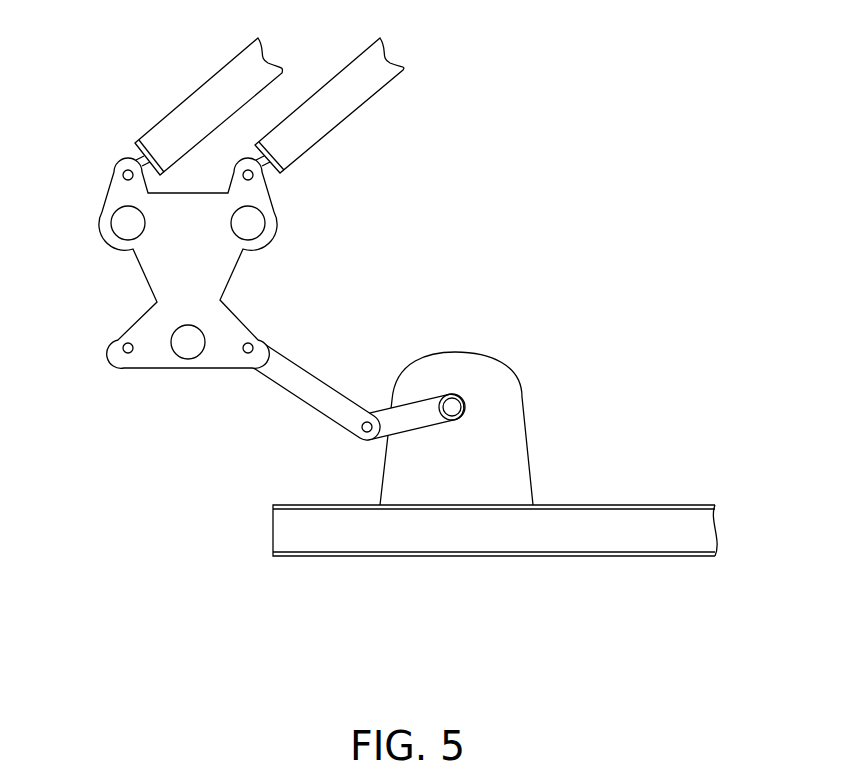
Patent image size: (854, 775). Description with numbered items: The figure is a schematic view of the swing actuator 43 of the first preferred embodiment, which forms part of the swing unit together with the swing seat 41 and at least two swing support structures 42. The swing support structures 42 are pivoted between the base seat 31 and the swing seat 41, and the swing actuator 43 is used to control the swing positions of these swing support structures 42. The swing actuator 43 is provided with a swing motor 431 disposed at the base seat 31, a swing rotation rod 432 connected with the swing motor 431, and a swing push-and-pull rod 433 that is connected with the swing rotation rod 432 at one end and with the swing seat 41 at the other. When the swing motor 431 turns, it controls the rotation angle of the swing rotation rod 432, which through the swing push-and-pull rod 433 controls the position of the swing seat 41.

The base seat 31 is at (598, 542).
The swing seat 41 is at (163, 281).
The swing support structures 42 is at (187, 100).
The swing actuator 43 is at (513, 274).
The swing motor 431 is at (515, 445).
The swing rotation rod 432 is at (387, 417).
The swing push-and-pull rod 433 is at (278, 378).